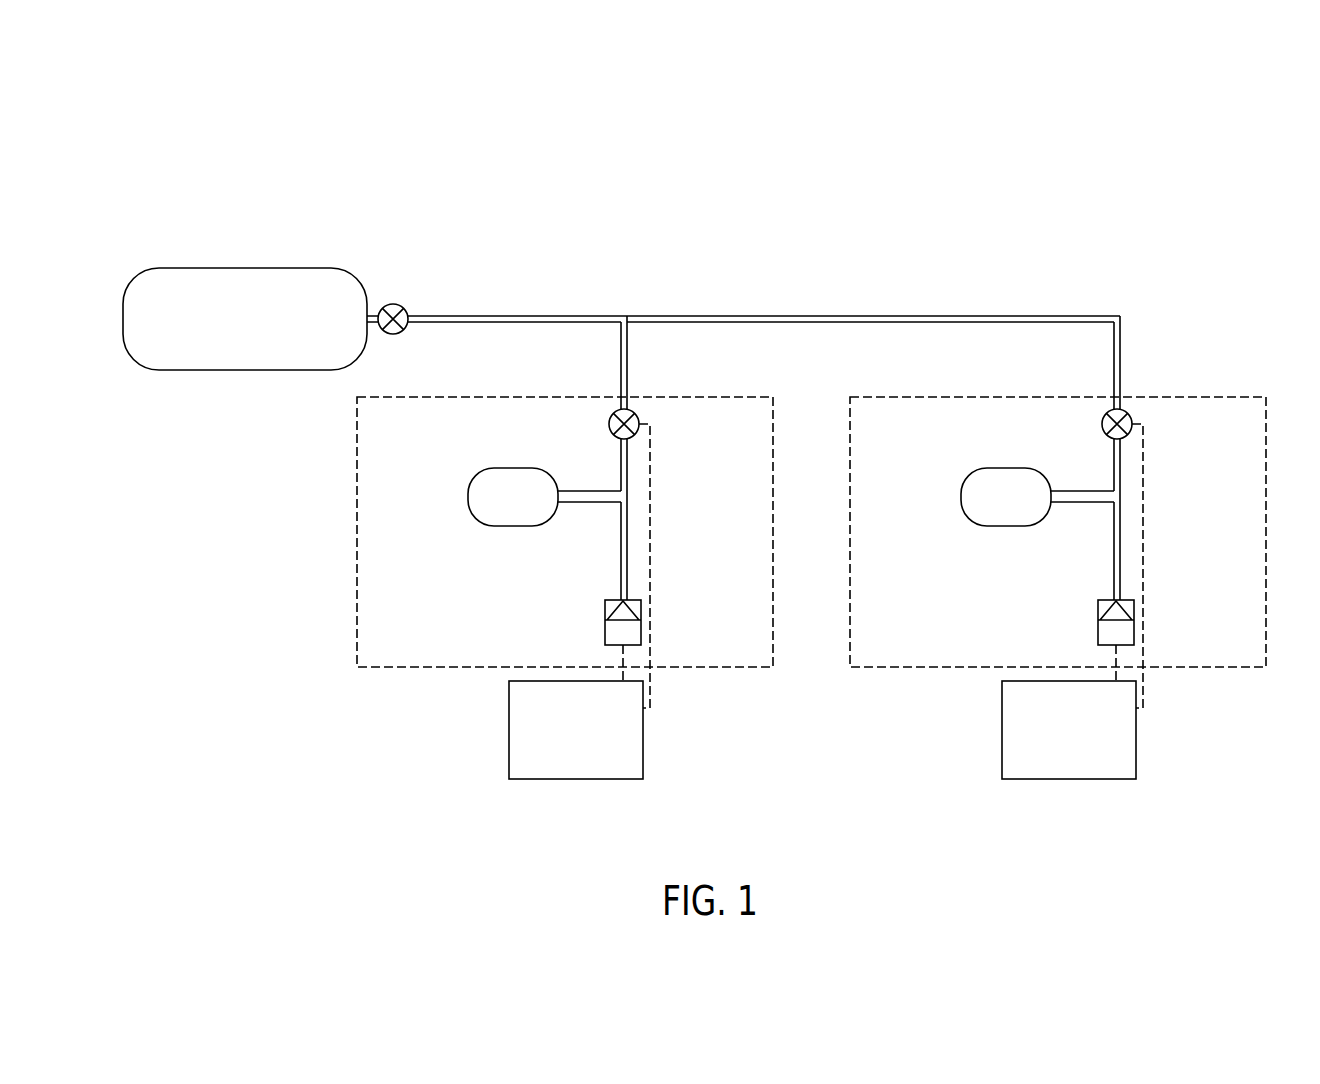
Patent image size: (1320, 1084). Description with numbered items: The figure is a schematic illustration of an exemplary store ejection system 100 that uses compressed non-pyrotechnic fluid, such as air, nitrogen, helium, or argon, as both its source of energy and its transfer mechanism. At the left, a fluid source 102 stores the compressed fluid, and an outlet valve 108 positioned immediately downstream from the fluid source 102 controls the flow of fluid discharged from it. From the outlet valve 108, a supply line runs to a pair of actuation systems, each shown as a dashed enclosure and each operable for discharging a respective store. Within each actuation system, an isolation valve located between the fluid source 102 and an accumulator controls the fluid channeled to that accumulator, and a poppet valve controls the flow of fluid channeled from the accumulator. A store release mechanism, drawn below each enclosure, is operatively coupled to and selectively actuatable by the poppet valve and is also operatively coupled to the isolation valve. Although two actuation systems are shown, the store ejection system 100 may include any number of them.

The store ejection system 100 is at (1087, 126).
The fluid source 102 is at (263, 268).
The outlet valve 108 is at (401, 306).